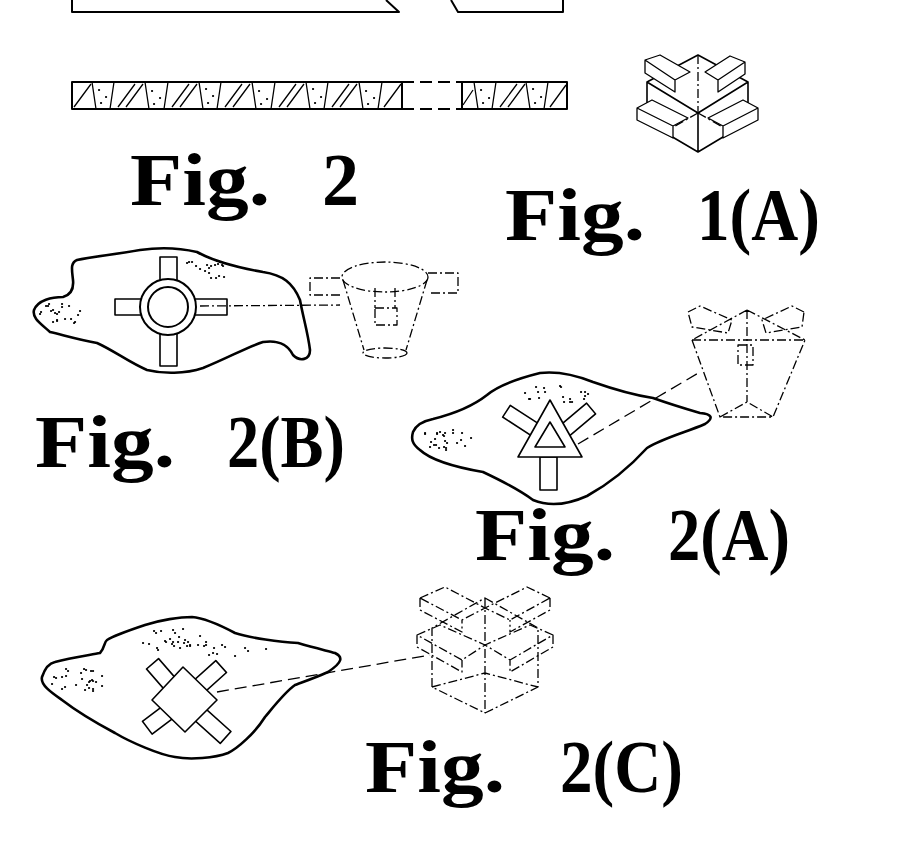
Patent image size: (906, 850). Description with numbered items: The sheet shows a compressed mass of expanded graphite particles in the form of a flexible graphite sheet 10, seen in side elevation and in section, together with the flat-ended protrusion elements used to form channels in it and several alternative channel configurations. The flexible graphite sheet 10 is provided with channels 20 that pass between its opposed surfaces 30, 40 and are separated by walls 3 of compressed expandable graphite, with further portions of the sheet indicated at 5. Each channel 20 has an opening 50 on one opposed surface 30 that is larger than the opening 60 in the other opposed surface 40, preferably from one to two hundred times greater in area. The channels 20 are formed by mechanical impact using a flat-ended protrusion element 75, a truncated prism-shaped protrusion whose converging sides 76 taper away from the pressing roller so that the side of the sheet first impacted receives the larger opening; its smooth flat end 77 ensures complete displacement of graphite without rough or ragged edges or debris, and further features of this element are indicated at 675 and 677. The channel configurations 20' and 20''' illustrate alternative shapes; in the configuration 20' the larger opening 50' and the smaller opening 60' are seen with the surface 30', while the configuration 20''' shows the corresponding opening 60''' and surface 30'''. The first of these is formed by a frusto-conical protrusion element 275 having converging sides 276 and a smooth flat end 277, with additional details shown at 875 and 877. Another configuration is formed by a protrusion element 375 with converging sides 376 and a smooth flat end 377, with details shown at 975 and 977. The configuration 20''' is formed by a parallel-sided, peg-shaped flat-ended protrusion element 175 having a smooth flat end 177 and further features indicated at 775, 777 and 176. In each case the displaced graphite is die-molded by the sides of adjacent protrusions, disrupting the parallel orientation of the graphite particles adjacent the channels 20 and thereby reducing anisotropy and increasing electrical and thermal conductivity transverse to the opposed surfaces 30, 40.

In FIG. 2, the flexible graphite sheet 10 is at (578, 94).
In FIG. 2, the channels 20 is at (114, 60).
In FIG. 2, the cavity 5 is at (133, 82).
In FIG. 2, the openings 50 is at (205, 64).
In FIG. 2, the opposed surface 30 is at (486, 63).
In FIG. 2, the openings 60 is at (89, 130).
In FIG. 2, the opposed surface 40 is at (515, 109).
In FIG. 2, the walls 3 is at (137, 113).
In FIG. 1A, the flat-ended protrusion element 75 is at (687, 70).
In FIG. 1A, the arm top face 675 is at (727, 88).
In FIG. 1A, the sides of protrusion 76 is at (743, 100).
In FIG. 1A, the arm 677 is at (733, 132).
In FIG. 1A, the smooth flat end 77 is at (672, 148).
In FIG. 2B, the channel configuration 20' is at (106, 250).
In FIG. 2B, the circular opening 60' is at (201, 303).
In FIG. 2B, the arm slot 50' is at (107, 357).
In FIG. 2B, the sheet body 30' is at (172, 322).
In FIG. 2B, the bracket 875 is at (392, 256).
In FIG. 2B, the frusto-conical flat-ended protrusion element 275 is at (405, 260).
In FIG. 2B, the converging sides of protrusion 276 is at (427, 333).
In FIG. 2B, the bottom 877 is at (372, 352).
In FIG. 2B, the smooth flat end 277 is at (407, 360).
In FIG. 2A, the flat-ended protrusion element 375 is at (757, 305).
In FIG. 2A, the arm 975 is at (790, 303).
In FIG. 2A, the converging sides of protrusion 376 is at (700, 367).
In FIG. 2A, the bottom 977 is at (760, 418).
In FIG. 2A, the smooth flat end 377 is at (745, 427).
In FIG. 2C, the channel configuration 20''' is at (111, 636).
In FIG. 2C, the square opening 60''' is at (213, 678).
In FIG. 2C, the sheet body 30''' is at (191, 693).
In FIG. 2C, the cubic connector 775 is at (485, 598).
In FIG. 2C, the arm 777 is at (430, 622).
In FIG. 2C, the parallel-sided peg-shaped flat-ended protrusion element 175 is at (550, 642).
In FIG. 2C, the arm 176 is at (432, 683).
In FIG. 2C, the smooth flat end 177 is at (540, 705).